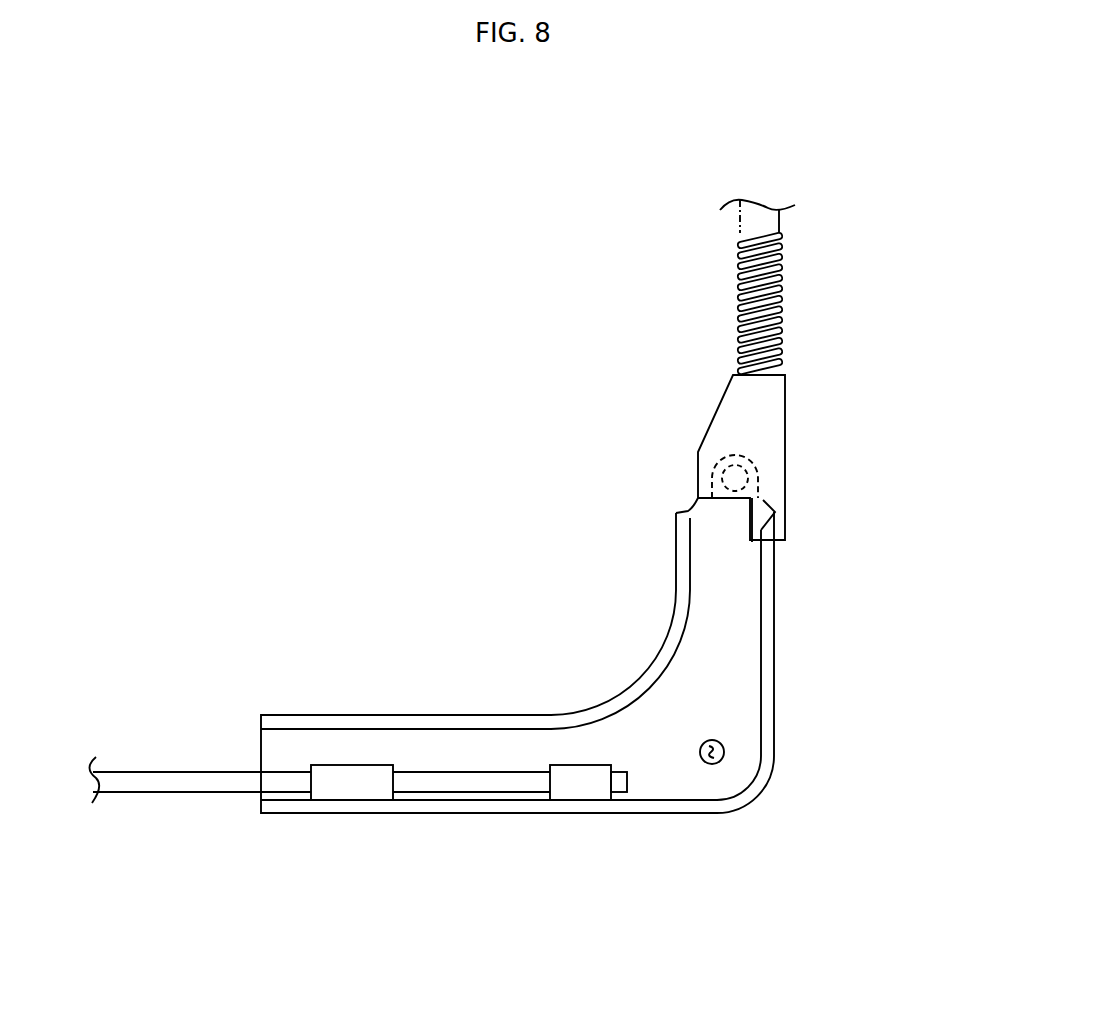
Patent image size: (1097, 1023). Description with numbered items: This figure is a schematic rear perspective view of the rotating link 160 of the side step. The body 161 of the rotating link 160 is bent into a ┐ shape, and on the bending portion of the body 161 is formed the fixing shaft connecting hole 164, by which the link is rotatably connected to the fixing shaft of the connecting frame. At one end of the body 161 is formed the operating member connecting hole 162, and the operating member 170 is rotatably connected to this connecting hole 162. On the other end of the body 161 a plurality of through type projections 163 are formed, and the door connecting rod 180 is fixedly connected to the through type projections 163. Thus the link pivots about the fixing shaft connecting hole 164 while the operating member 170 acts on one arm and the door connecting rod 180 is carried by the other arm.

The rotating link 160 is at (512, 133).
The body 161 is at (733, 672).
The operating member connecting hole 162 is at (735, 478).
The through type projection 163 is at (580, 786).
The fixing shaft connecting hole 164 is at (724, 751).
The operating member 170 is at (800, 291).
The door connecting rod 180 is at (155, 778).